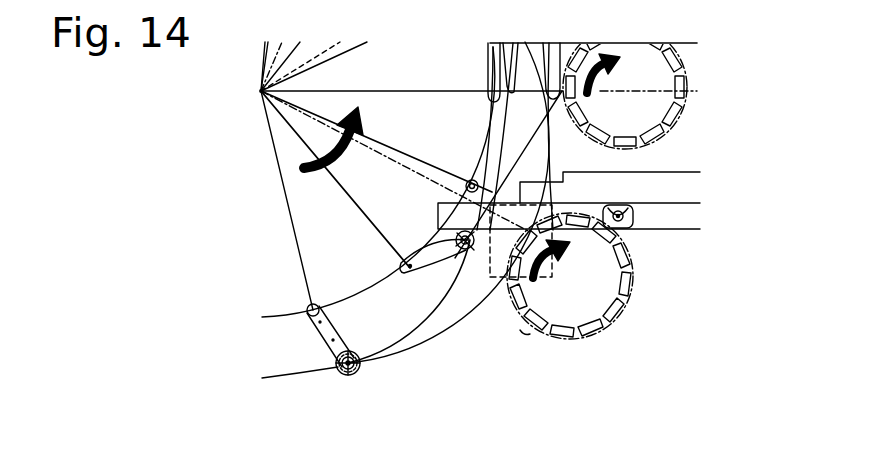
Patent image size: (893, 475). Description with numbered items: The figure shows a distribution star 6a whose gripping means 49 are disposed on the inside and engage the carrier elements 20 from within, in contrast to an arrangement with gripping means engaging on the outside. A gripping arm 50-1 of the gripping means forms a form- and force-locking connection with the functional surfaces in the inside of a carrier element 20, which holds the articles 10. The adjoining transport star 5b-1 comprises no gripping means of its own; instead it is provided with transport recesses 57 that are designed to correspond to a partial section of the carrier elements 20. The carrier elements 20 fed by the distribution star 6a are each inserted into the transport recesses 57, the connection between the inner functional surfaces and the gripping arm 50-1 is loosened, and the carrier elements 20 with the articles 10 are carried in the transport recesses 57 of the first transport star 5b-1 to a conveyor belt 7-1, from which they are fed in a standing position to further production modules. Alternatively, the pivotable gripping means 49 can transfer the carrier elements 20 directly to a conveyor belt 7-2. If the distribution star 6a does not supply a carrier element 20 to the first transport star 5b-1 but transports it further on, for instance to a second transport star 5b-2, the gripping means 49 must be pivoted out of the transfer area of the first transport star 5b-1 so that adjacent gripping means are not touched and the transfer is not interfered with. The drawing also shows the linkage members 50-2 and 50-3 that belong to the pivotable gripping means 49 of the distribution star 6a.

The distribution star 6a is at (260, 92).
The articles 10 is at (380, 416).
The carrier element 20 is at (336, 374).
The gripping means 49 is at (308, 308).
The gripping arm 50-1 is at (474, 178).
The lever arm 50-2 is at (396, 243).
The connecting rod 50-3 is at (338, 358).
The transport recess 57 is at (527, 338).
The first transport star 5b-1 is at (608, 288).
The second transport star 5b-2 is at (655, 109).
The conveyor belt 7-1 is at (700, 172).
The conveyor belt 7-2 is at (700, 203).